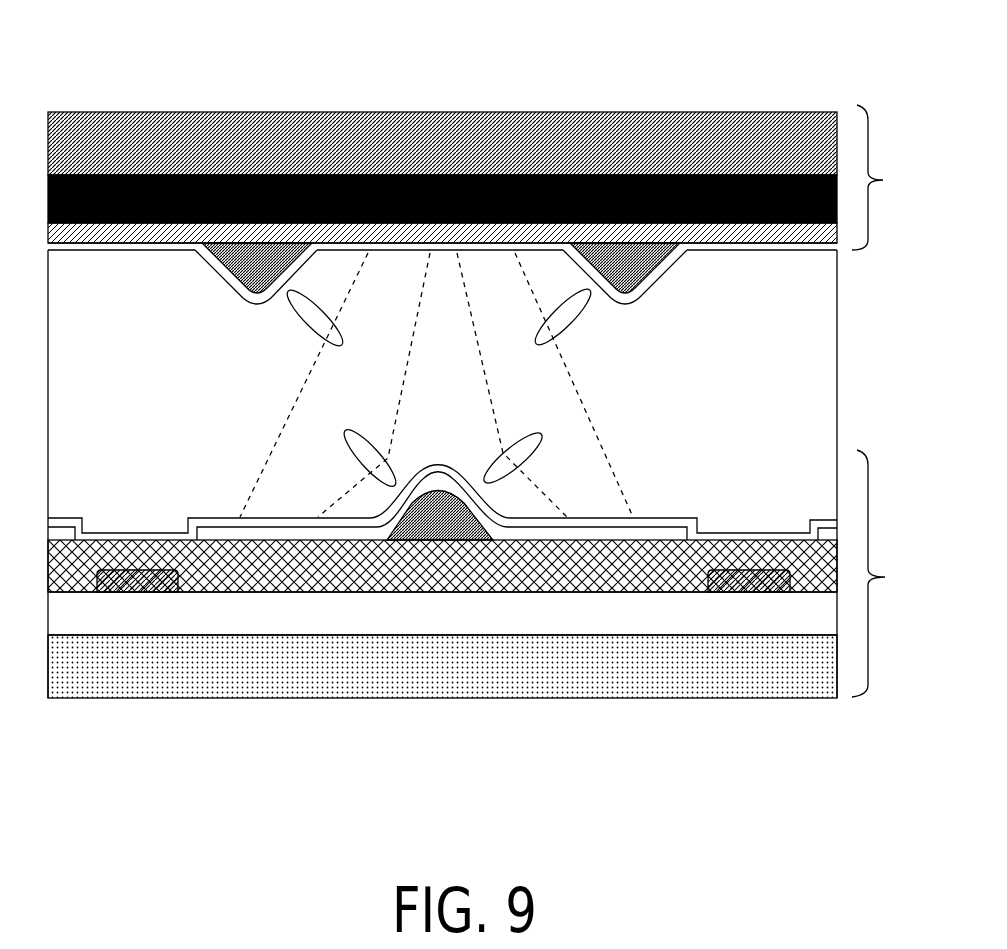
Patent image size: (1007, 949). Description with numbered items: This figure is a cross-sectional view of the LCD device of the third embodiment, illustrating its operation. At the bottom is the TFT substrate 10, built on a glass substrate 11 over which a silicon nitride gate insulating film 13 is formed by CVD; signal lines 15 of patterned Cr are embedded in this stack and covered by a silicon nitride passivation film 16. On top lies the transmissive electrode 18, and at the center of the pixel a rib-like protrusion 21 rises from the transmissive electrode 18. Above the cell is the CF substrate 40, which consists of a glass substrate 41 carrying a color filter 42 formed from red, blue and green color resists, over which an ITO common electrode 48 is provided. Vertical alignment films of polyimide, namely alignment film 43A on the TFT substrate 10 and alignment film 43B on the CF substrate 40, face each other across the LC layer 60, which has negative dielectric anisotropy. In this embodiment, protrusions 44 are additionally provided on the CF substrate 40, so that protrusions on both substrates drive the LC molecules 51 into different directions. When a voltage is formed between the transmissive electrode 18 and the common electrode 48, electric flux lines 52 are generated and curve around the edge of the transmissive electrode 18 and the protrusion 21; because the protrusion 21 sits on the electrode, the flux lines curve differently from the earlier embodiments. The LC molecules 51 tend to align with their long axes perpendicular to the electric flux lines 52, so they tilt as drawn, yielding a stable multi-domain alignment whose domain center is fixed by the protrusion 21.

The TFT substrate 10 is at (889, 573).
The glass substrate 11 is at (677, 680).
The gate insulating film 13 is at (607, 607).
The signal line 15 is at (133, 577).
The passivation film 16 is at (292, 545).
The transmissive electrode 18 is at (522, 533).
The protrusion 21 is at (443, 515).
The CF substrate 40 is at (887, 177).
The glass substrate 41 is at (468, 143).
The CF 42 is at (617, 205).
The alignment film 43A is at (693, 515).
The alignment film 43B is at (743, 258).
The protrusion 44 is at (237, 263).
The common electrode 48 is at (763, 233).
The LC molecule 51 is at (293, 302).
The electric flux line 52 is at (600, 371).
The LC layer 60 is at (825, 357).